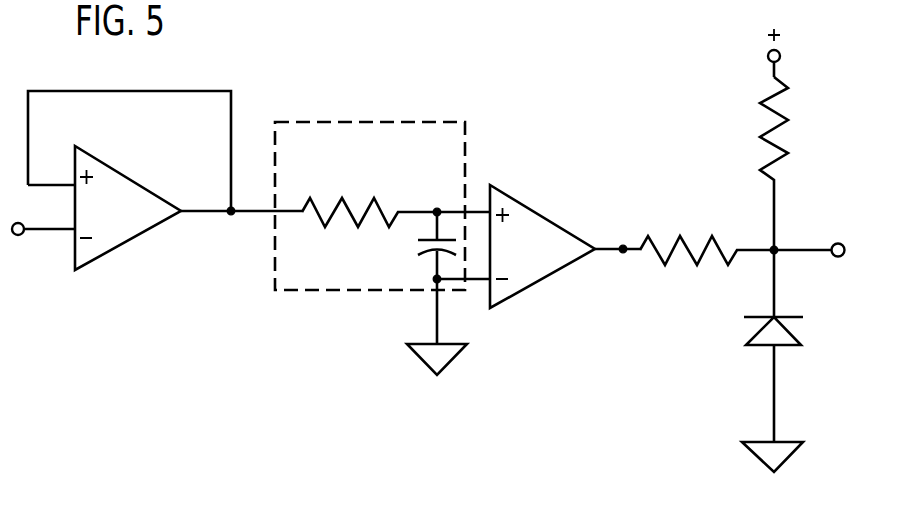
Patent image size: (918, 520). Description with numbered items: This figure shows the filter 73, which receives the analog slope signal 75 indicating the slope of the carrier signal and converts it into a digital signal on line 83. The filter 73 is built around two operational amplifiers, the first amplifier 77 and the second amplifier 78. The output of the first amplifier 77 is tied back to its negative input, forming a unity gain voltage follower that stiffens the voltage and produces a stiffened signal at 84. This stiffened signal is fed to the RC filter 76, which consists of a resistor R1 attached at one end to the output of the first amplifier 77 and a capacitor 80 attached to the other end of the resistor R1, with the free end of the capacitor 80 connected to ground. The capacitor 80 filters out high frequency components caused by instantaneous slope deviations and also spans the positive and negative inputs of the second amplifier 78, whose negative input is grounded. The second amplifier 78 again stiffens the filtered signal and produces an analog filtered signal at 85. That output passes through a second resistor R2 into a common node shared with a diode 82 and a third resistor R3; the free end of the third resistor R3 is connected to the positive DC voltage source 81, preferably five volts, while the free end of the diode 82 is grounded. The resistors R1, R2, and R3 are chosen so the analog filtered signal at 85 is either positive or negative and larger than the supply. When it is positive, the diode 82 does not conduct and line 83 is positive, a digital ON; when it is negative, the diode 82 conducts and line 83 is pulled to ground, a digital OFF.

The filter 73 is at (338, 70).
The slope signal 75 is at (63, 233).
The RC filter 76 is at (443, 140).
The first amplifier 77 is at (137, 178).
The second amplifier 78 is at (548, 218).
The capacitor 80 is at (421, 252).
The positive DC voltage source 81 is at (768, 52).
The diode 82 is at (757, 328).
The line 83 is at (834, 244).
The stiffened signal 84 is at (228, 214).
The analog filtered signal 85 is at (618, 253).
The resistor R1 is at (317, 208).
The second resistor R2 is at (709, 260).
The third resistor R3 is at (772, 91).